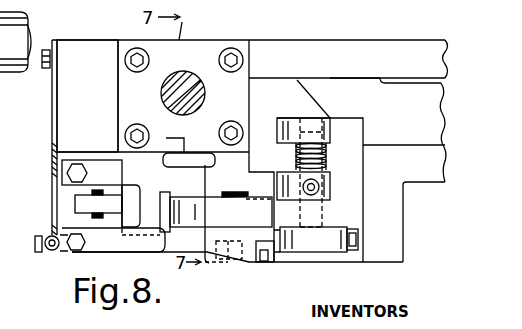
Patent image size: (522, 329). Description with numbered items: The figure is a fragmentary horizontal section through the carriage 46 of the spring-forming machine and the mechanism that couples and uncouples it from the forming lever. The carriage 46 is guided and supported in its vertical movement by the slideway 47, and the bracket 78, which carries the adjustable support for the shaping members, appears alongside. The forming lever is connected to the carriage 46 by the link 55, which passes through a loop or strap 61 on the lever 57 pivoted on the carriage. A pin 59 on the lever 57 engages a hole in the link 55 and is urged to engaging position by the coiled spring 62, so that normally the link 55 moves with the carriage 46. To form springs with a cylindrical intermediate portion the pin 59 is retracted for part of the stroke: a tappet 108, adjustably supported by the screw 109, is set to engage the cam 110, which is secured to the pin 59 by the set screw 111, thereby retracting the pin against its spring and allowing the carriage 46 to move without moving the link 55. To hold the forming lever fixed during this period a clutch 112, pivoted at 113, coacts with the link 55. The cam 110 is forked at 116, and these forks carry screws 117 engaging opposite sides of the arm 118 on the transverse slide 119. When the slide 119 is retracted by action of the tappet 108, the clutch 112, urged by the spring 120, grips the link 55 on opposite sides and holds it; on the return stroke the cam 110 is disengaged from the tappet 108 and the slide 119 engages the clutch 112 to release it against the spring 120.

The screw 109 is at (194, 71).
The bracket 78 is at (410, 47).
The slideway 47 is at (299, 80).
The carriage 46 is at (334, 80).
The lever 57 is at (403, 157).
The coiled spring 62 is at (327, 147).
The pin 59 is at (325, 165).
The set screw 111 is at (314, 188).
The link 55 is at (326, 247).
The loop or strap 61 is at (304, 263).
The cam 110 is at (245, 192).
The tappet 108 is at (257, 223).
The clutch 112 is at (233, 259).
The pivot 113 is at (217, 259).
The transverse slide 119 is at (87, 96).
The fork 116 is at (122, 233).
The screws 117 is at (98, 217).
The arm 118 is at (137, 192).
The spring 120 is at (55, 251).